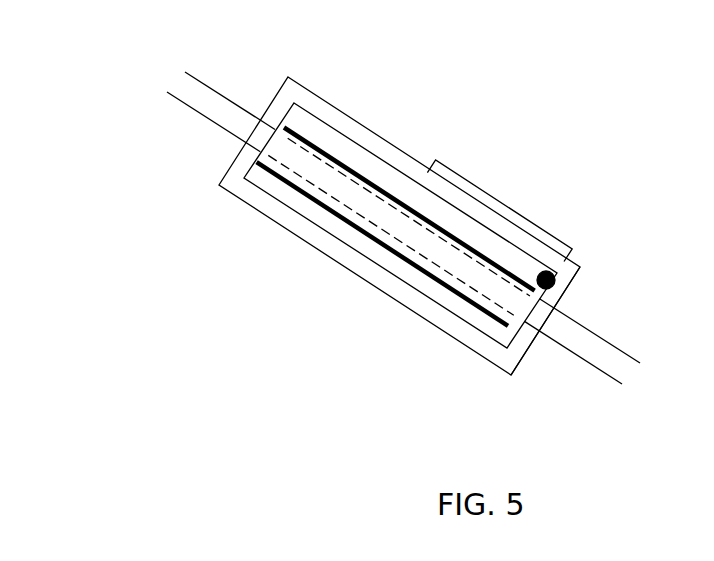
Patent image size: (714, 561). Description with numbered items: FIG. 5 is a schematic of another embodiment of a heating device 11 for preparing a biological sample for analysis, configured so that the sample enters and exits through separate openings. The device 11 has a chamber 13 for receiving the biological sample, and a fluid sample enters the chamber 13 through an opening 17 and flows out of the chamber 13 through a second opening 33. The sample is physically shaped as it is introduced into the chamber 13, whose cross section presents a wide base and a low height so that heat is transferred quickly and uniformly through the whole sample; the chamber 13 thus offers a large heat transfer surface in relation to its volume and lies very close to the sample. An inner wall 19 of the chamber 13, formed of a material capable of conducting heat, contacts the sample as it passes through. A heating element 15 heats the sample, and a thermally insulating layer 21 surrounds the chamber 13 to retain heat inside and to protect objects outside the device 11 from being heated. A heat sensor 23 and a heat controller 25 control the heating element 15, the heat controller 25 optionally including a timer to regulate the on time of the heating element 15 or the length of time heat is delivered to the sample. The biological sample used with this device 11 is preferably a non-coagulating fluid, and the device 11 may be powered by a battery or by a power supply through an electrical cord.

The heating device 11 is at (518, 84).
The chamber 13 is at (373, 226).
The heating element 15 is at (294, 110).
The opening 17 is at (243, 115).
The inner wall 19 is at (460, 295).
The thermally insulating layer 21 is at (350, 116).
The heat sensor 23 is at (564, 273).
The heat controller 25 is at (532, 224).
The second opening 33 is at (557, 314).